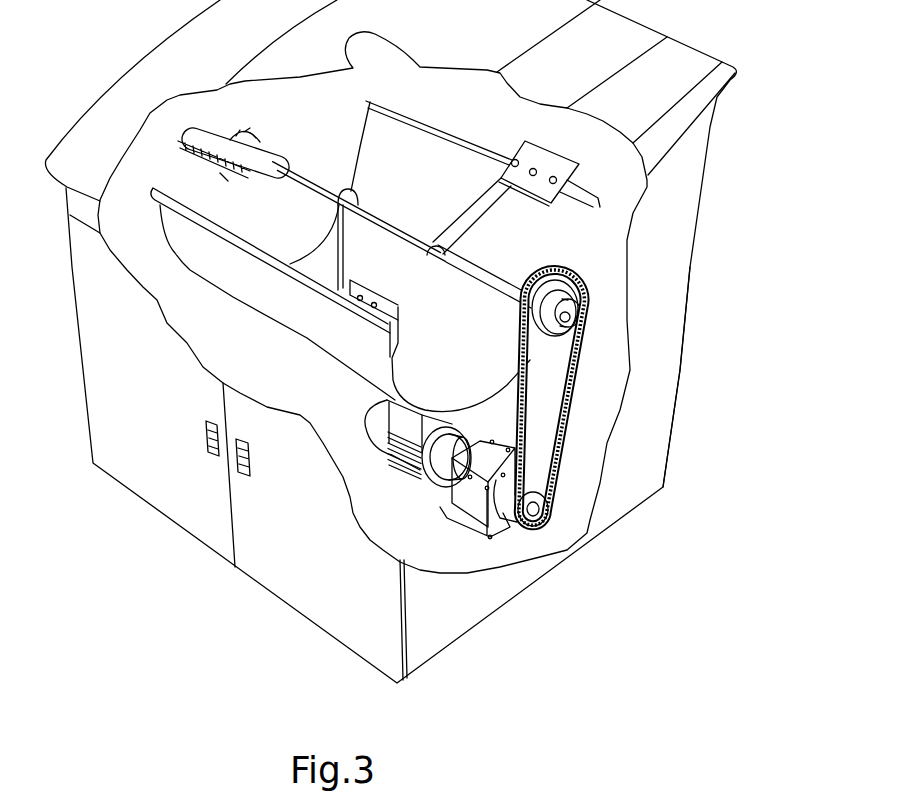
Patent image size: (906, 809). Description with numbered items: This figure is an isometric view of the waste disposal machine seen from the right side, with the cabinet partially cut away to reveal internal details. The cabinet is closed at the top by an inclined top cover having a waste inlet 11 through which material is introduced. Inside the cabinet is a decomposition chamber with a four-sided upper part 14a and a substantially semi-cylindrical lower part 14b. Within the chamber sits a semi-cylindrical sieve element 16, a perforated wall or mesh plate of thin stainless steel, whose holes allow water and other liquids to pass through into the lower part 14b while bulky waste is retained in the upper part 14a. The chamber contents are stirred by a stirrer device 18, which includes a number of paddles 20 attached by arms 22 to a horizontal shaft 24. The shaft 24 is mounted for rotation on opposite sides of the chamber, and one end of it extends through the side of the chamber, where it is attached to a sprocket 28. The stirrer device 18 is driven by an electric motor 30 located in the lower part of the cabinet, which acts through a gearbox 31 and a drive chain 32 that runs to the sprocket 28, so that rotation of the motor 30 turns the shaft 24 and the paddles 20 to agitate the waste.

The waste inlet 11 is at (257, 220).
The four-sided upper part 14a is at (578, 228).
The semi-cylindrical lower part 14b is at (578, 373).
The sieve element 16 is at (188, 245).
The stirrer device 18 is at (387, 220).
The paddles 20 is at (558, 160).
The arms 22 is at (248, 155).
The horizontal shaft 24 is at (473, 273).
The sprocket 28 is at (585, 266).
The electric motor 30 is at (398, 440).
The gearbox 31 is at (460, 498).
The drive chain 32 is at (561, 415).